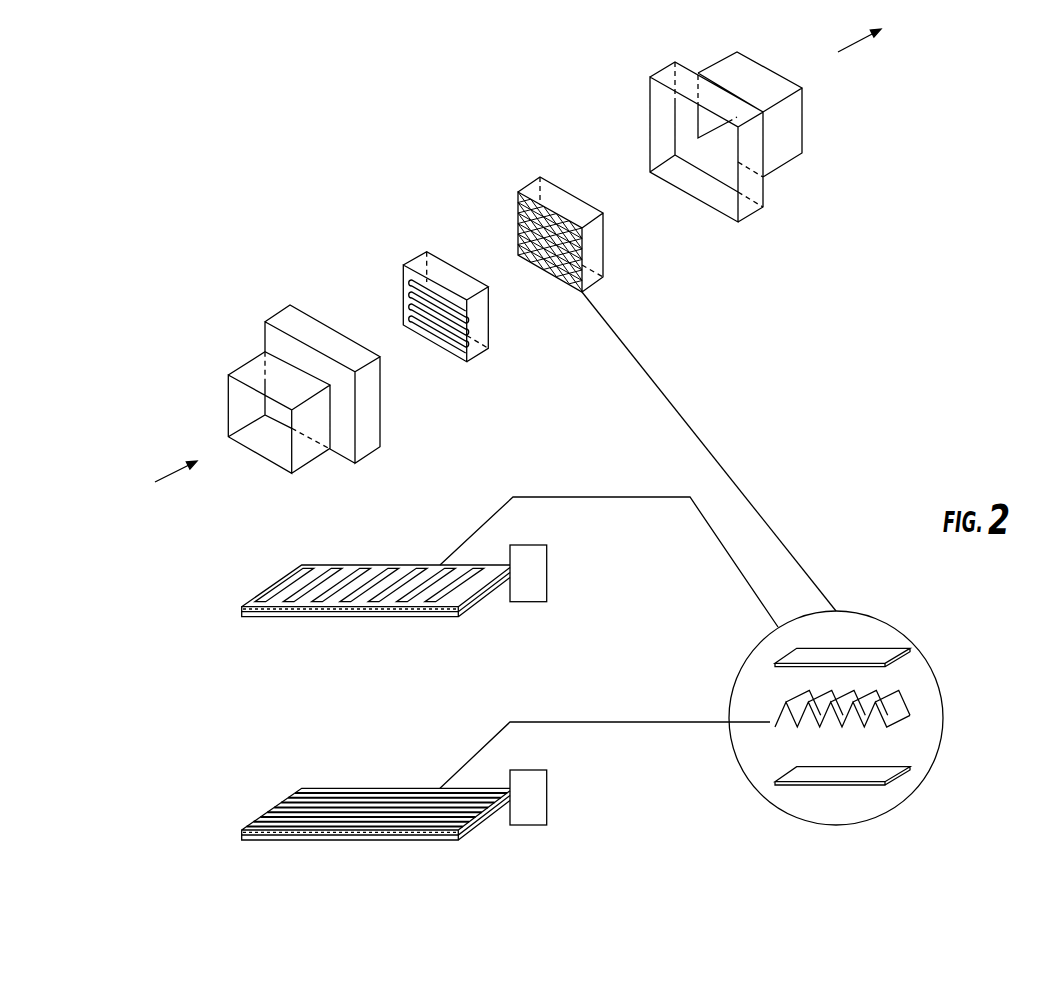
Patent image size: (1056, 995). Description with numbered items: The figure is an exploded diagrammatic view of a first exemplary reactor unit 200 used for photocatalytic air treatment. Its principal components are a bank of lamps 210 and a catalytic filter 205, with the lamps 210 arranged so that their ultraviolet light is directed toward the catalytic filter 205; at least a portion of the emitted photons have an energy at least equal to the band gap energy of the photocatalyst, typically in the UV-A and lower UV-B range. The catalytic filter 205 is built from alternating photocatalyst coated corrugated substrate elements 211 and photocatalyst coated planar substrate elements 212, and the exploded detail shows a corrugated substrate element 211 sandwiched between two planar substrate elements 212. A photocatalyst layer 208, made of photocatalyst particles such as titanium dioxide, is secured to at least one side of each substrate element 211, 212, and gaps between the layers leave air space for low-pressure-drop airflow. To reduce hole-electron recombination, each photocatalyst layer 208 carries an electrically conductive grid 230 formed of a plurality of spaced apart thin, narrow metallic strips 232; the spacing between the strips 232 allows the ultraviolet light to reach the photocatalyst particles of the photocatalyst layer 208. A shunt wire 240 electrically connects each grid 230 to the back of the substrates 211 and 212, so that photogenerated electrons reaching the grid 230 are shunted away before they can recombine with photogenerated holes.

The reactor unit 200 is at (272, 106).
The catalytic filter 205 is at (494, 188).
The bank of lamps 210 is at (410, 258).
The photocatalyst layer 208 is at (258, 605).
The electrically conductive grid 230 is at (337, 565).
The electrically conductive strip 232 is at (285, 597).
The planar substrate element 212 is at (477, 598).
The corrugated substrate element 211 is at (477, 820).
The shunt wire 240 is at (547, 552).